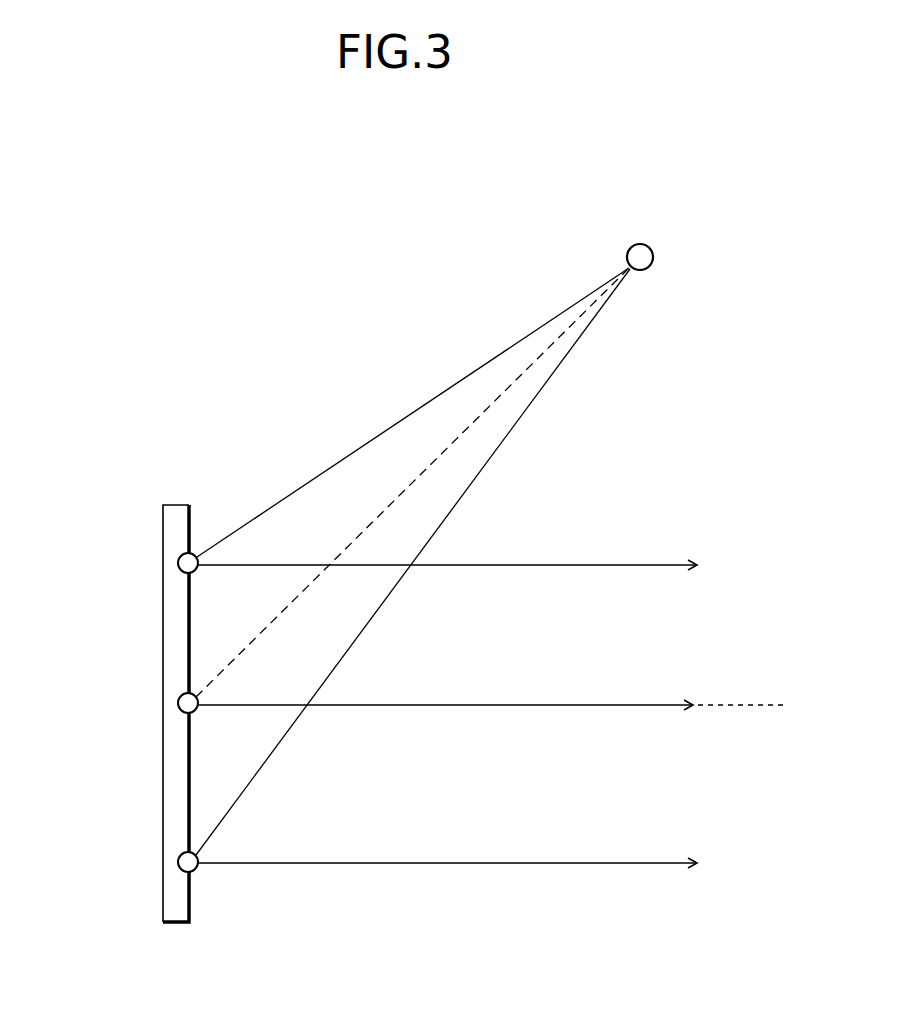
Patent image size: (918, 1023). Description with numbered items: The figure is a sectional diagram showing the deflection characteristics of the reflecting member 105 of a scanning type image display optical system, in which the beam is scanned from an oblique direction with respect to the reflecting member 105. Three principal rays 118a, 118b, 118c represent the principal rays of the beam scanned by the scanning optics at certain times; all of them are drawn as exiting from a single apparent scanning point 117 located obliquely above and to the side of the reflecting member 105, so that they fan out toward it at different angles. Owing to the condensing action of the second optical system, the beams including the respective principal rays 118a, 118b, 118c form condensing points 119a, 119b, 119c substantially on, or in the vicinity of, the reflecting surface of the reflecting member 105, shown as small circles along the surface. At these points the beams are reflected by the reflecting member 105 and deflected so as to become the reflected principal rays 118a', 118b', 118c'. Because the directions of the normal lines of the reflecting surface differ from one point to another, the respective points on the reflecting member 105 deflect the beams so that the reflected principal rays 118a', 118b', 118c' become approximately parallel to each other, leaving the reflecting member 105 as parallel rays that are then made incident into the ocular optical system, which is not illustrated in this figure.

The reflecting member 105 is at (175, 922).
The apparent scanning point 117 is at (629, 247).
The principal ray 118a is at (412, 482).
The principal ray 118b is at (413, 412).
The principal ray 118c is at (413, 562).
The reflected principal ray 118a' is at (492, 746).
The reflected principal ray 118b' is at (447, 604).
The reflected principal ray 118c' is at (447, 903).
The condensing point 119a is at (178, 703).
The condensing point 119b is at (178, 563).
The condensing point 119c is at (178, 862).